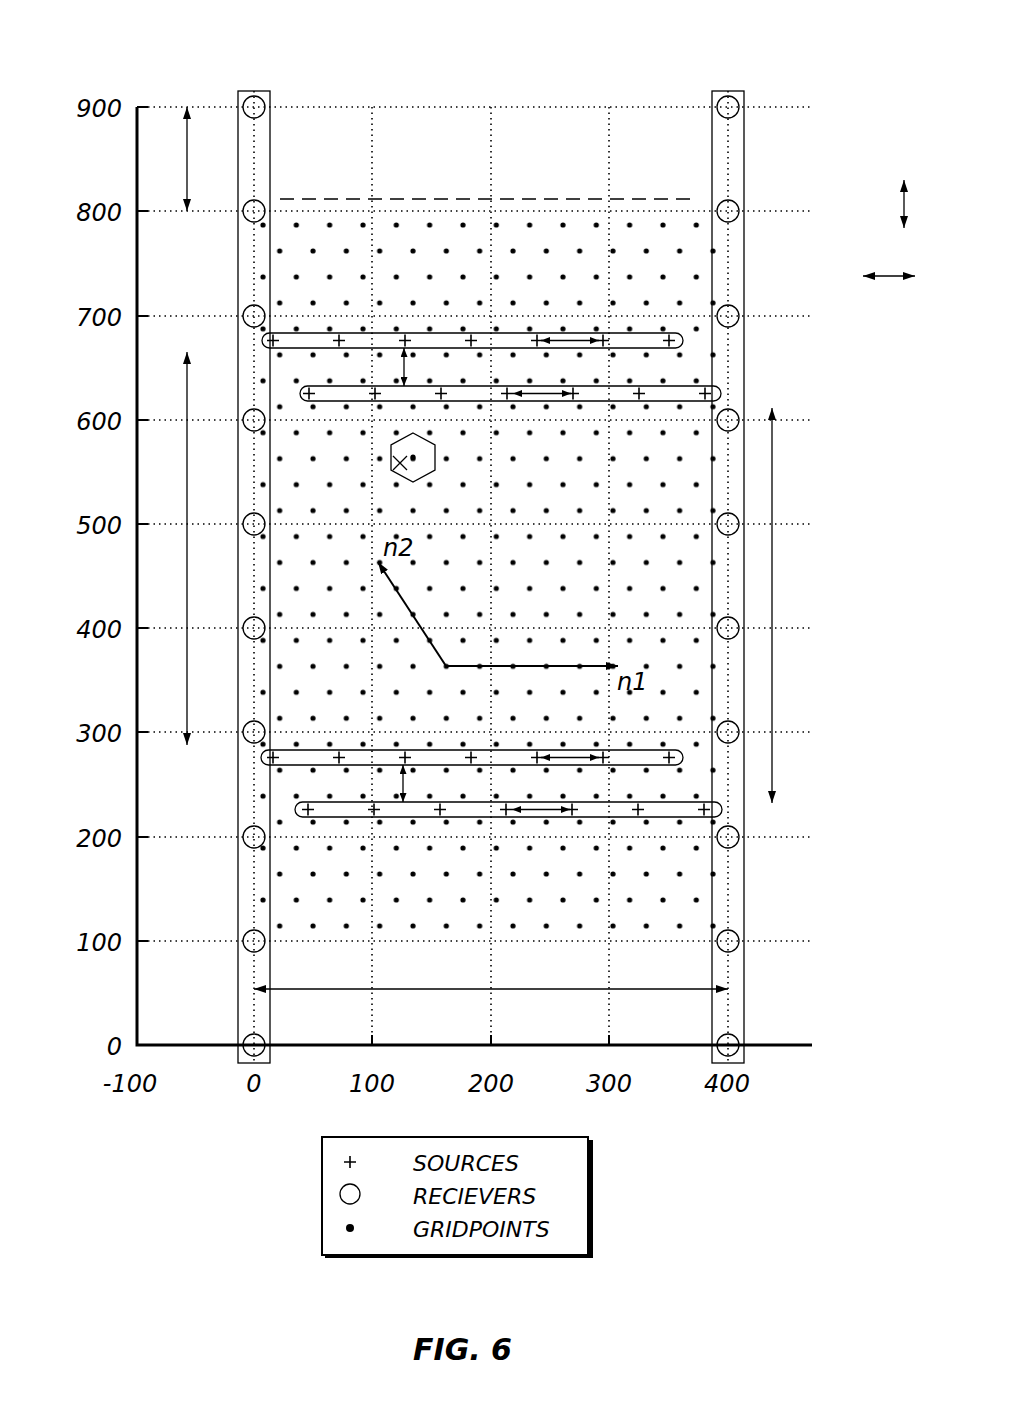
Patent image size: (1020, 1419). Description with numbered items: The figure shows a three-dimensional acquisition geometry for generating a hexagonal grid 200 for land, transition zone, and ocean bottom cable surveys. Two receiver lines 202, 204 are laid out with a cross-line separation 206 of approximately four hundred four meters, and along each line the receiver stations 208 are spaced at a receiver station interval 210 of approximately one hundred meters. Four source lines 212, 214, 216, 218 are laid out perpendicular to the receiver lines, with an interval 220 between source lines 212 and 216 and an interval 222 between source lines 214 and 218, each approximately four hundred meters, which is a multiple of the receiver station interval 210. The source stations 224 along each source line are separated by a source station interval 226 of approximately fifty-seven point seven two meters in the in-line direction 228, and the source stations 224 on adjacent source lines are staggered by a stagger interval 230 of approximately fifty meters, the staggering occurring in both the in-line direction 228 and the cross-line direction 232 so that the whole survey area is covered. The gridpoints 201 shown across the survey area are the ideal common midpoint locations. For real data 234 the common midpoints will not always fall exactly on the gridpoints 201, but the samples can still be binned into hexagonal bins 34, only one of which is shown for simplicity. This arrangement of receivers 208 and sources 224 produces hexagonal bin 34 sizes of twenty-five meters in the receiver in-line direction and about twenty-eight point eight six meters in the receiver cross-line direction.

The hexagonal grid 200 is at (612, 50).
The gridpoints 201 is at (430, 224).
The receiver line 202 is at (272, 150).
The receiver line 204 is at (746, 150).
The cross-line separation 206 is at (514, 989).
The receiver station 208 is at (262, 98).
The receiver station interval 210 is at (187, 168).
The source line 212 is at (684, 341).
The source line 214 is at (722, 393).
The source line 216 is at (685, 757).
The source line 218 is at (723, 808).
The interval 220 is at (187, 488).
The interval 222 is at (773, 478).
The source station 224 is at (374, 386).
The source station interval 226 is at (538, 389).
The in-line direction 228 is at (893, 276).
The stagger interval 230 is at (408, 368).
The cross-line direction 232 is at (904, 206).
The real data 234 is at (399, 462).
The hexagonal bin 34 is at (426, 452).